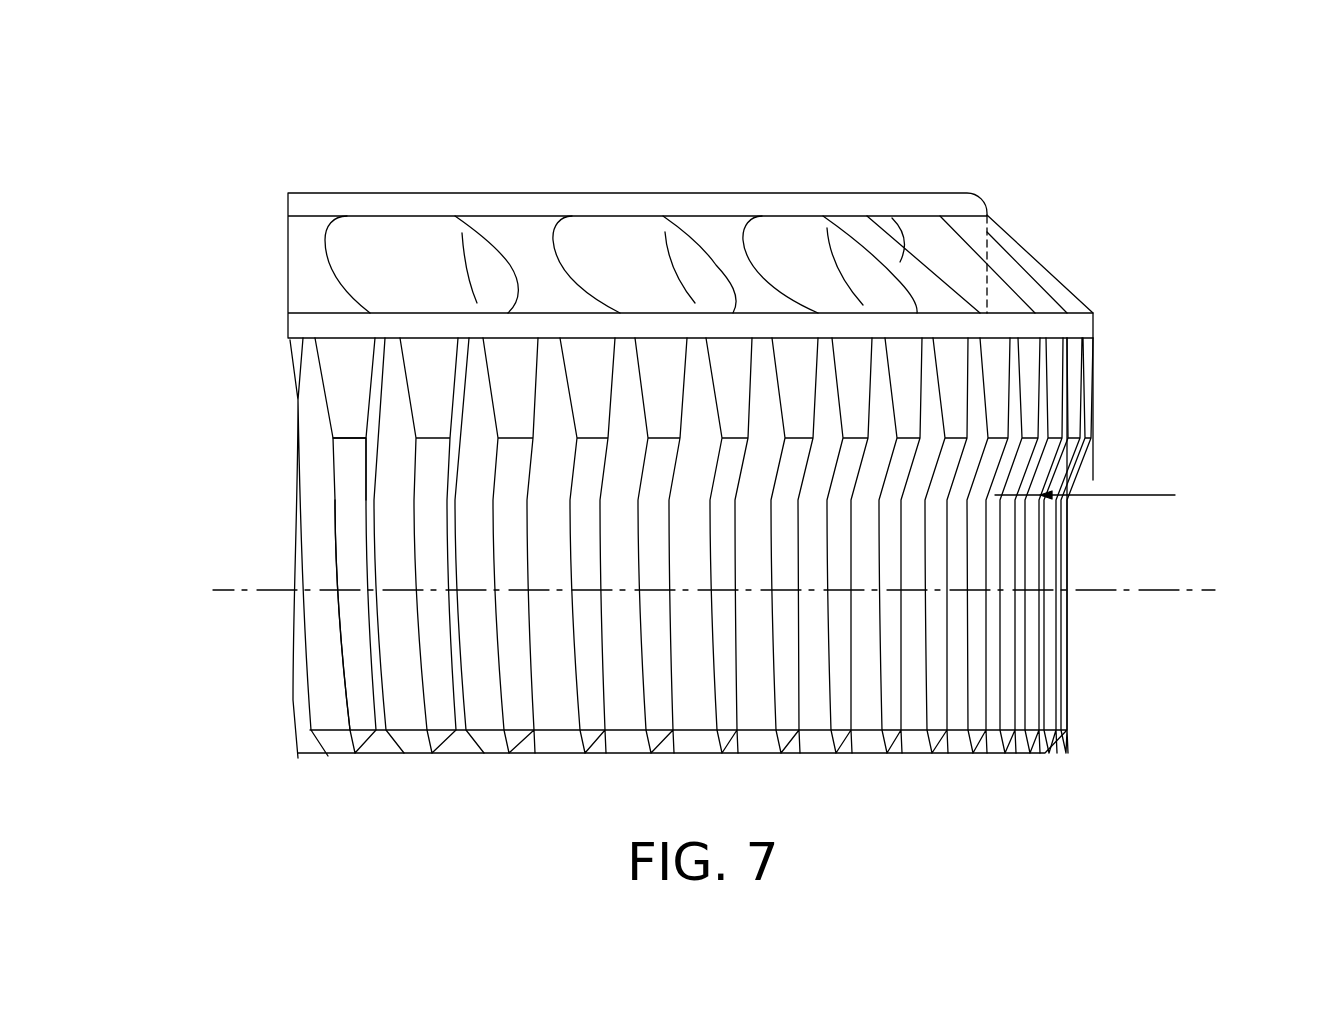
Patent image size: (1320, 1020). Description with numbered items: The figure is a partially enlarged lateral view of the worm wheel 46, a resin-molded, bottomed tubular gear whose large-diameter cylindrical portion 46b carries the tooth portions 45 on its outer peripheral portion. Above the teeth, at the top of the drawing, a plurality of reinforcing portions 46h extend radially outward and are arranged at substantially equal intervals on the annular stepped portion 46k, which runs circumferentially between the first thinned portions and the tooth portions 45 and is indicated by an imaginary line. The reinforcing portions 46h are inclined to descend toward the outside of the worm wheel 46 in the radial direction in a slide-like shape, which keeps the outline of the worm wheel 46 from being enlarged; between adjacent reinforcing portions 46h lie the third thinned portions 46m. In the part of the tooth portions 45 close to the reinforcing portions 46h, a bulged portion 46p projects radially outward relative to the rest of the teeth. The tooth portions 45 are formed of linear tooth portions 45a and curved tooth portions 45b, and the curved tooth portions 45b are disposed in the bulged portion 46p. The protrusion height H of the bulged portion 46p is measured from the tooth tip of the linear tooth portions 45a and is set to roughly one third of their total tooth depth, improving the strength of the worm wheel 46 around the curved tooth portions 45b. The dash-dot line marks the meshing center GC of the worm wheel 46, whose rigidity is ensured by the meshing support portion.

The worm wheel 46 is at (178, 188).
The large-diameter cylindrical portion 46b is at (434, 183).
The third thinned portions 46m is at (428, 288).
The reinforcing portions 46h is at (540, 268).
The annular stepped portion 46k is at (1018, 256).
The bulged portion 46p is at (1100, 386).
The tooth portions 45 is at (1072, 648).
The linear tooth portions 45a is at (362, 661).
The curved tooth portions 45b is at (352, 482).
The protrusion height H is at (1085, 480).
The meshing center GC is at (213, 594).